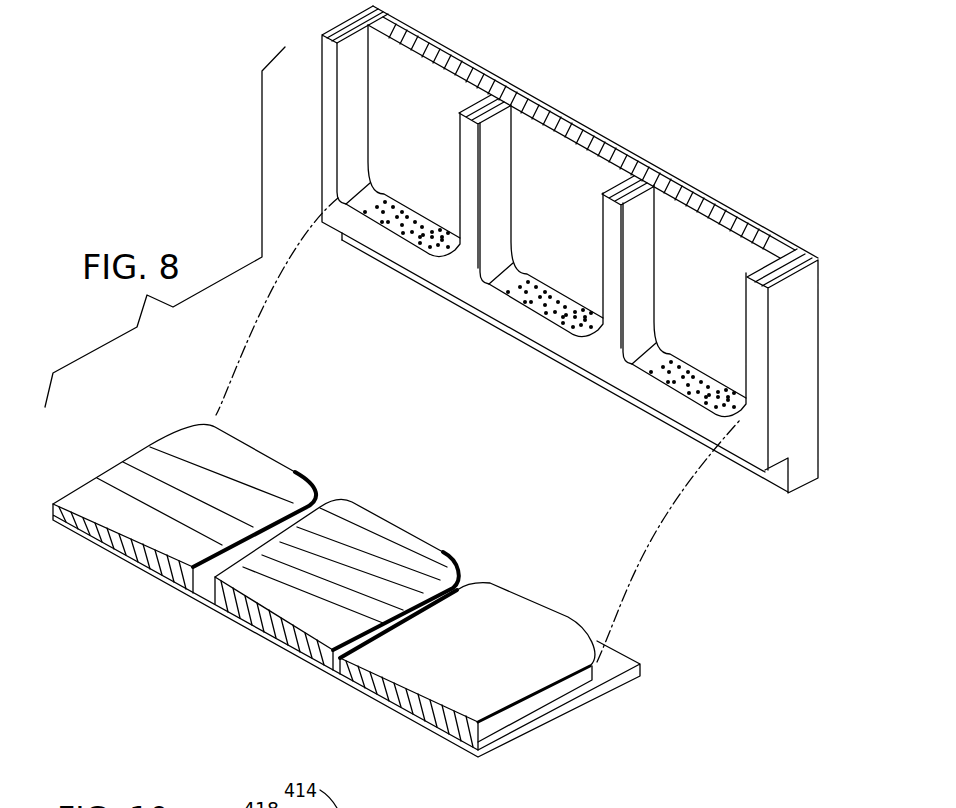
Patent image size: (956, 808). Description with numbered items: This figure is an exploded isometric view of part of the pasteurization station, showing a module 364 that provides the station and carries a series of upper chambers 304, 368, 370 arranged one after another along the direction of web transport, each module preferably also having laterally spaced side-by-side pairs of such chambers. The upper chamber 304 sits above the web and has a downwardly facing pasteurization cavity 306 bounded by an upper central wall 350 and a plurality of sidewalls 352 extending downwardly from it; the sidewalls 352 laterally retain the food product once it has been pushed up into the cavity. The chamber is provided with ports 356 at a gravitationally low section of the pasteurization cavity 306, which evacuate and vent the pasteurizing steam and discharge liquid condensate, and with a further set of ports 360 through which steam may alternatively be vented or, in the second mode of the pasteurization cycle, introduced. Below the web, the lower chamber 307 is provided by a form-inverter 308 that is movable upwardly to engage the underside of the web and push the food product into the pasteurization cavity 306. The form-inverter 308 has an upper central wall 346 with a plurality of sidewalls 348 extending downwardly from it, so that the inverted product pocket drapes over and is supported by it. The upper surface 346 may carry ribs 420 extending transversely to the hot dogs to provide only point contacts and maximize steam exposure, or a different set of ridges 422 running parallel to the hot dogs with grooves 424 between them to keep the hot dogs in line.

The chamber 370 is at (440, 47).
The module 364 is at (500, 88).
The chamber 368 is at (580, 127).
The sidewalls 352 is at (642, 223).
The upper central wall 350 is at (683, 227).
The upper chamber 304 is at (733, 257).
The pasteurization cavity 306 is at (762, 222).
The ports 360 is at (695, 382).
The ports 356 is at (693, 395).
The ribs 420 is at (157, 465).
The ridges 422 is at (390, 532).
The grooves 424 is at (413, 542).
The upper central wall 346 is at (492, 605).
The form-inverter 308 is at (502, 639).
The lower chamber 307 is at (615, 682).
The sidewalls 348 is at (548, 695).